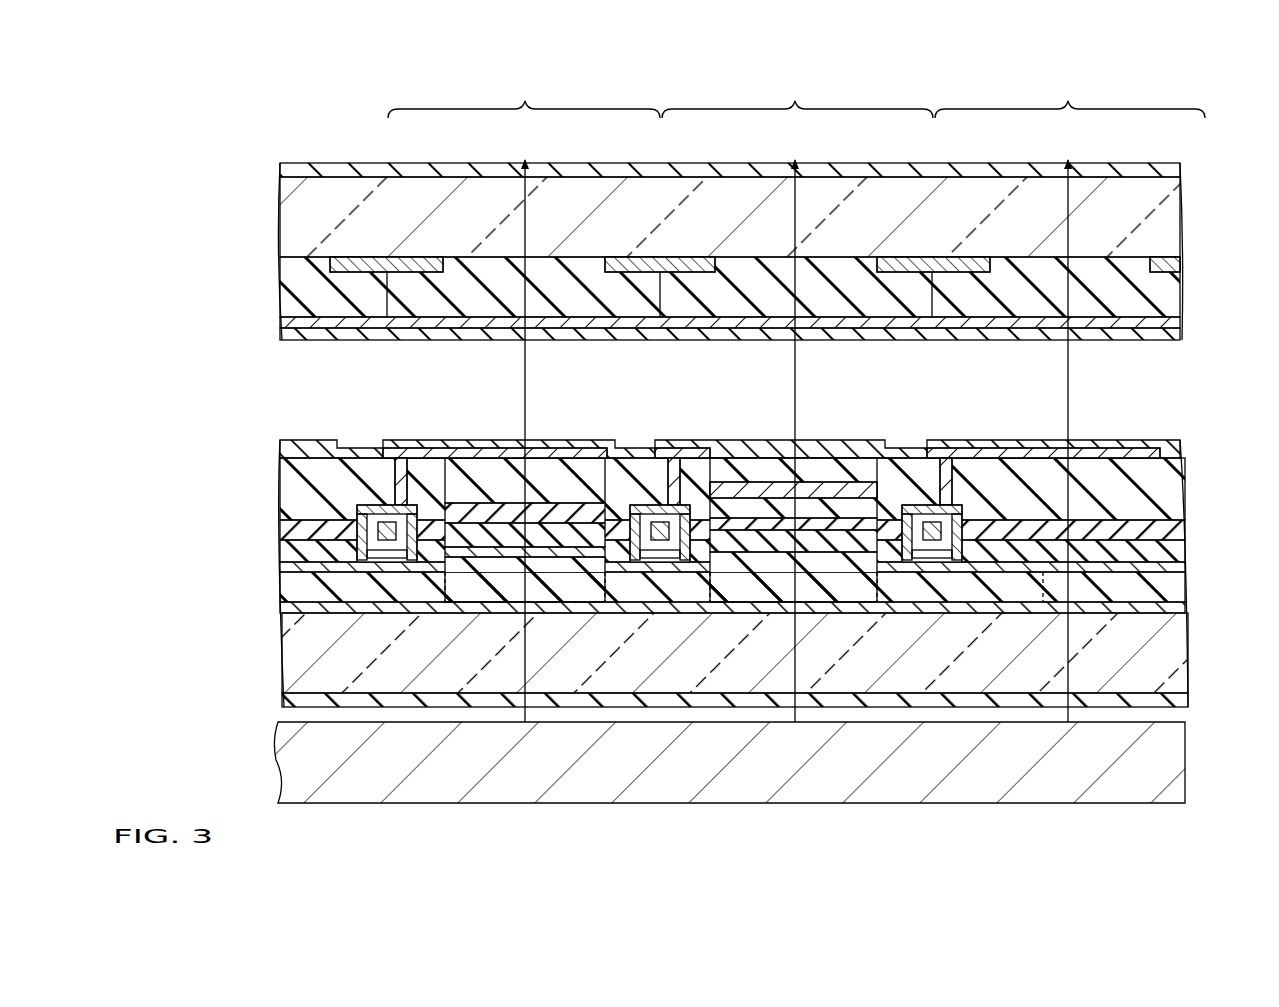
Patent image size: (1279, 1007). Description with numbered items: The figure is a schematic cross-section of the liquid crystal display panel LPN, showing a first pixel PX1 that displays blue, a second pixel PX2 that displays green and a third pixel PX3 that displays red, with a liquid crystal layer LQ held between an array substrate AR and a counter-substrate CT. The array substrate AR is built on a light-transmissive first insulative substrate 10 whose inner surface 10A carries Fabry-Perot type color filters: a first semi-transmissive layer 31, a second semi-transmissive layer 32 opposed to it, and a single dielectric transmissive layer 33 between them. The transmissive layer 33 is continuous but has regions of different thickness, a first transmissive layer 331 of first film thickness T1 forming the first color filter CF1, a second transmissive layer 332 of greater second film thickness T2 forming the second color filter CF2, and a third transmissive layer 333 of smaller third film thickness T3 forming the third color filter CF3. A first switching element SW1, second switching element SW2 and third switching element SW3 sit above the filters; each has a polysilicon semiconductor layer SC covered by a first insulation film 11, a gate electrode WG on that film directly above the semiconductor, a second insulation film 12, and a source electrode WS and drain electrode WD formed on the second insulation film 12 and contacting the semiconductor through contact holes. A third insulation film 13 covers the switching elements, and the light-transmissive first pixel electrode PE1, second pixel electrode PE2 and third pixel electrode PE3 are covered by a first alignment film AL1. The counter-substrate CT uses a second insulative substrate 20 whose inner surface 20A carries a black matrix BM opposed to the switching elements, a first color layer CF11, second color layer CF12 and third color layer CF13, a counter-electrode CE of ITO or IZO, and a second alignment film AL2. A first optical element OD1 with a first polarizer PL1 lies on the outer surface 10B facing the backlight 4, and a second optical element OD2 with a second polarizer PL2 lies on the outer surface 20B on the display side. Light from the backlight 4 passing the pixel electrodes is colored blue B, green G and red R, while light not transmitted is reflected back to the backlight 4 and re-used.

The counter-substrate CT is at (726, 236).
The array substrate AR is at (727, 612).
The liquid crystal layer LQ is at (300, 390).
The liquid crystal display panel LPN is at (1185, 160).
The second optical element OD2 is at (310, 172).
The second polarizer PL2 is at (220, 186).
The second insulative substrate 20 is at (325, 220).
The inner surface of second insulative substrate 20A is at (298, 262).
The outer surface of second insulative substrate 20B is at (312, 162).
The black matrix BM is at (417, 265).
The first color layer CF11 is at (585, 300).
The second color layer CF12 is at (857, 300).
The third color layer CF13 is at (1130, 300).
The counter-electrode CE is at (300, 323).
The second alignment film AL2 is at (300, 334).
The first alignment film AL1 is at (300, 449).
The third insulation film 13 is at (300, 490).
The second insulation film 12 is at (300, 530).
The first insulation film 11 is at (300, 551).
The second semi-transmissive layer 32 is at (1186, 567).
The transmissive layer 33 is at (1186, 587).
The first semi-transmissive layer 31 is at (1186, 607).
The inner surface of first insulative substrate 10A is at (298, 607).
The first insulative substrate 10 is at (300, 655).
The outer surface of first insulative substrate 10B is at (318, 732).
The first optical element OD1 is at (312, 703).
The first polarizer PL1 is at (220, 715).
The backlight 4 is at (1172, 760).
The source electrode WS is at (362, 555).
The gate electrode WG is at (388, 535).
The drain electrode WD is at (412, 520).
The first pixel electrode PE1 is at (402, 480).
The second pixel electrode PE2 is at (690, 490).
The third pixel electrode PE3 is at (963, 490).
The semiconductor layer SC is at (372, 562).
The first switching element SW1 is at (388, 545).
The second switching element SW2 is at (660, 545).
The third switching element SW3 is at (932, 545).
The first film thickness T1 is at (497, 590).
The second film thickness T2 is at (770, 590).
The third film thickness T3 is at (1042, 598).
The first color filter CF1 is at (470, 620).
The second color filter CF2 is at (745, 620).
The third color filter CF3 is at (413, 620).
The first transmissive layer 331 is at (548, 598).
The second transmissive layer 332 is at (822, 598).
The third transmissive layer 333 is at (1090, 598).
The first pixel PX1 is at (524, 95).
The second pixel PX2 is at (797, 95).
The third pixel PX3 is at (1070, 95).
The blue B is at (522, 421).
The green G is at (793, 421).
The red R is at (1066, 421).